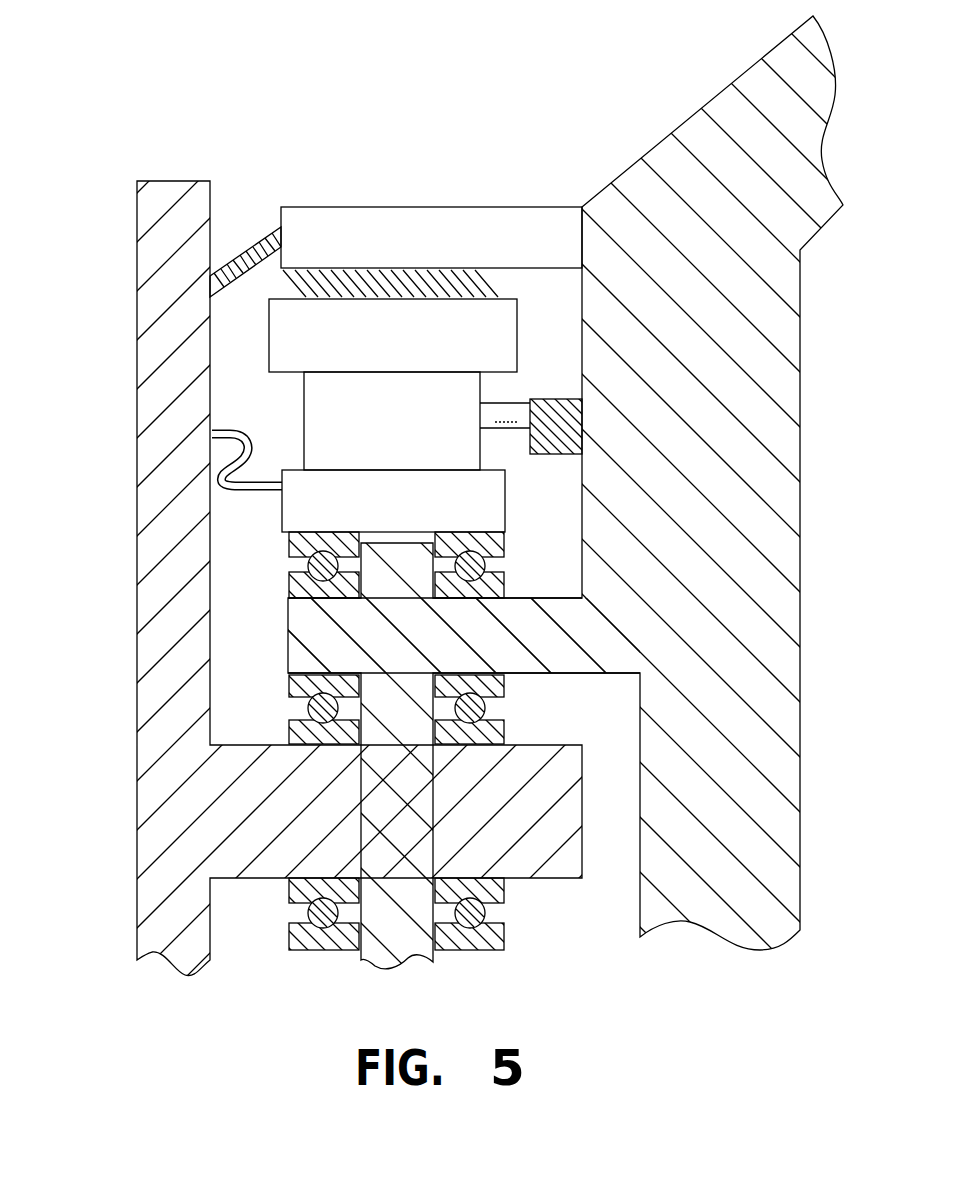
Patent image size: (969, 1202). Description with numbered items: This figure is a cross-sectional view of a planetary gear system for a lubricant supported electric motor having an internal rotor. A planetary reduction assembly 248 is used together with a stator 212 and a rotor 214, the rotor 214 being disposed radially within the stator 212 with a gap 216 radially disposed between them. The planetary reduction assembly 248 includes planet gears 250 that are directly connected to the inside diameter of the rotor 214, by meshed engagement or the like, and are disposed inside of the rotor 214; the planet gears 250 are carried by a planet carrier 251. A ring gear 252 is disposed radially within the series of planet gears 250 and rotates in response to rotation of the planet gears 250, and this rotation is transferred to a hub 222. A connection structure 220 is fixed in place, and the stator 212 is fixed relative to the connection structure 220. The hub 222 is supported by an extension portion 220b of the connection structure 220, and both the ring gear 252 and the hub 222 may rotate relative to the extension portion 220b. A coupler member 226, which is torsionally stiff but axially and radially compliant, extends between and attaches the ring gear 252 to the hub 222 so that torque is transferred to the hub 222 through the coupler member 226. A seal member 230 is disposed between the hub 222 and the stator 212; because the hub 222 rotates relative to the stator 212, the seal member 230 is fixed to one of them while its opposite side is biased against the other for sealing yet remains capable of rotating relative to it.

The stator 212 is at (457, 222).
The rotor 214 is at (375, 350).
The gap 216 is at (495, 282).
The connection structure 220 is at (658, 167).
The extension portion 220b is at (582, 663).
The hub 222 is at (142, 513).
The coupler member 226 is at (233, 430).
The seal member 230 is at (280, 228).
The planetary reduction assembly 248 is at (250, 343).
The planet gears 250 is at (375, 430).
The planet carrier 251 is at (557, 432).
The ring gear 252 is at (497, 512).